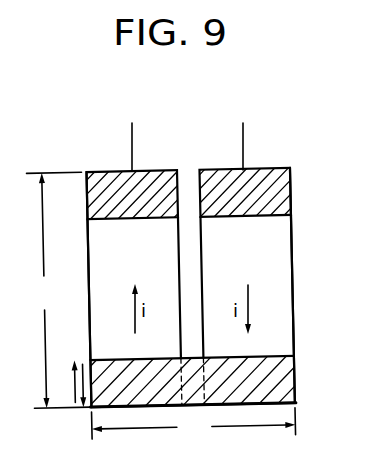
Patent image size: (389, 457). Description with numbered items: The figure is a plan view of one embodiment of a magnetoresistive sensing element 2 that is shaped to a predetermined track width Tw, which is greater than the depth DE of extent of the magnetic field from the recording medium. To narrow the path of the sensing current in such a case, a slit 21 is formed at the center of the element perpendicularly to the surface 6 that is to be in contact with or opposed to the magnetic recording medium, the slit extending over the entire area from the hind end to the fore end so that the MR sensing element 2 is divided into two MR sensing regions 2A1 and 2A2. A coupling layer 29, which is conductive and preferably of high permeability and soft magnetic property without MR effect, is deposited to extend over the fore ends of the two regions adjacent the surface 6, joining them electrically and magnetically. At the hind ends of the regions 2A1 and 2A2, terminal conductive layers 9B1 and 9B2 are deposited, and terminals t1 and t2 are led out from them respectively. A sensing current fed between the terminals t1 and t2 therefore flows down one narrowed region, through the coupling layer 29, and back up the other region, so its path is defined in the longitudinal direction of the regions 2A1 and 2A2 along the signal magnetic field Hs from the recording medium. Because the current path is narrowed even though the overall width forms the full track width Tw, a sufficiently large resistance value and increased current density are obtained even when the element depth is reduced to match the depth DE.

The terminal conductive layer 9B1 is at (157, 170).
The terminal conductive layer 9B2 is at (284, 181).
The slit 21 is at (190, 182).
The MR sensing element 2 is at (333, 237).
The MR sensing region 2A1 is at (170, 258).
The MR sensing region 2A2 is at (274, 303).
The coupling layer 29 is at (283, 369).
The surface 6 is at (272, 406).
The terminal t1 is at (122, 138).
The terminal t2 is at (251, 137).
The depth of extent of the magnetic field DE is at (59, 290).
The signal magnetic field Hs is at (73, 370).
The track width Tw is at (194, 423).